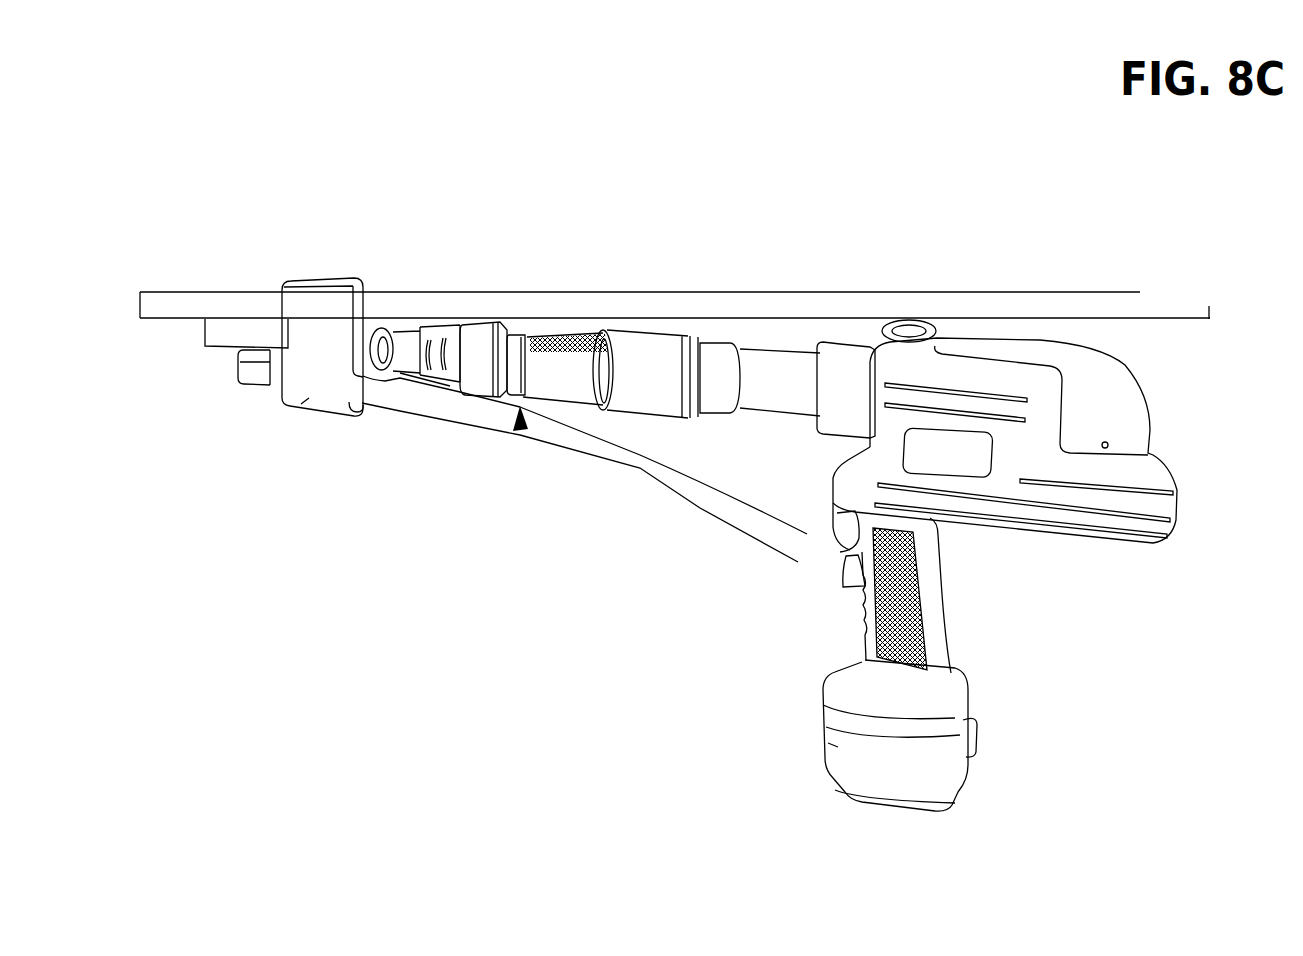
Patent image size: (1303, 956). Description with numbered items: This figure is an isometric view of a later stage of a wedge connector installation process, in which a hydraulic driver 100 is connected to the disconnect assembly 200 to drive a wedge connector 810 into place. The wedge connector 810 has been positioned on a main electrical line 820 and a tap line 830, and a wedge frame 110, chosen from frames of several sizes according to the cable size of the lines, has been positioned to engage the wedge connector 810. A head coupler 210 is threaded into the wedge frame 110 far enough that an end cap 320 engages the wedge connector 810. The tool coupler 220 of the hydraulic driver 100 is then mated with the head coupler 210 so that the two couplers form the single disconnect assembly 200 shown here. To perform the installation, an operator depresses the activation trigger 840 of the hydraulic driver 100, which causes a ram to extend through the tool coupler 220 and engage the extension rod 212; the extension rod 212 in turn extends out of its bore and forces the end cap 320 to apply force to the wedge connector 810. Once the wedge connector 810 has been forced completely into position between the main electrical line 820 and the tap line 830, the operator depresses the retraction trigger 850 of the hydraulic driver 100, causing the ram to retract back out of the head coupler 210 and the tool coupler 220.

The hydraulic driver 100 is at (1102, 368).
The wedge frame 110 is at (218, 350).
The disconnect assembly 200 is at (517, 433).
The head coupler 210 is at (433, 385).
The extension rod 212 is at (400, 338).
The tool coupler 220 is at (645, 402).
The end cap 320 is at (385, 328).
The wedge connector 810 is at (322, 278).
The main electrical line 820 is at (770, 292).
The tap line 830 is at (702, 508).
The activation trigger 840 is at (837, 527).
The retraction trigger 850 is at (847, 575).